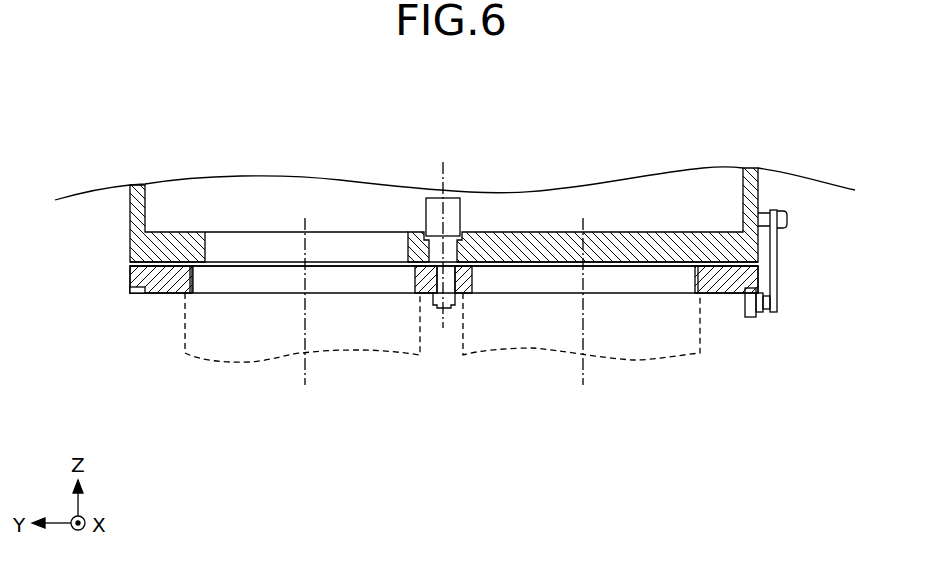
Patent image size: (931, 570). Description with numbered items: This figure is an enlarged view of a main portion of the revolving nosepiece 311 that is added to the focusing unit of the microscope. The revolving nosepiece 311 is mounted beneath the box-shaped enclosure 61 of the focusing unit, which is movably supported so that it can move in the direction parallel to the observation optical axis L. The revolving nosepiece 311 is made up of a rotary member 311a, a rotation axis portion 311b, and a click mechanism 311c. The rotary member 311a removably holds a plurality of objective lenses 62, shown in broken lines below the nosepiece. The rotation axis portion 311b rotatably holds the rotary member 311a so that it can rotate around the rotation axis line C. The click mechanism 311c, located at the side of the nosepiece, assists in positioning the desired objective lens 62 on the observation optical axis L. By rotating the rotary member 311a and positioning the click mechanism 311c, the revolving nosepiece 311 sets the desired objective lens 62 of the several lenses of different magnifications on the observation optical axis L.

The enclosure 61 is at (130, 222).
The revolving nosepiece 311 is at (720, 303).
The rotary member 311a is at (162, 293).
The rotation axis portion 311b is at (450, 212).
The click mechanism 311c is at (783, 262).
The objective lens 62 is at (212, 333).
The rotation axis line C is at (443, 168).
The observation optical axis L is at (303, 370).